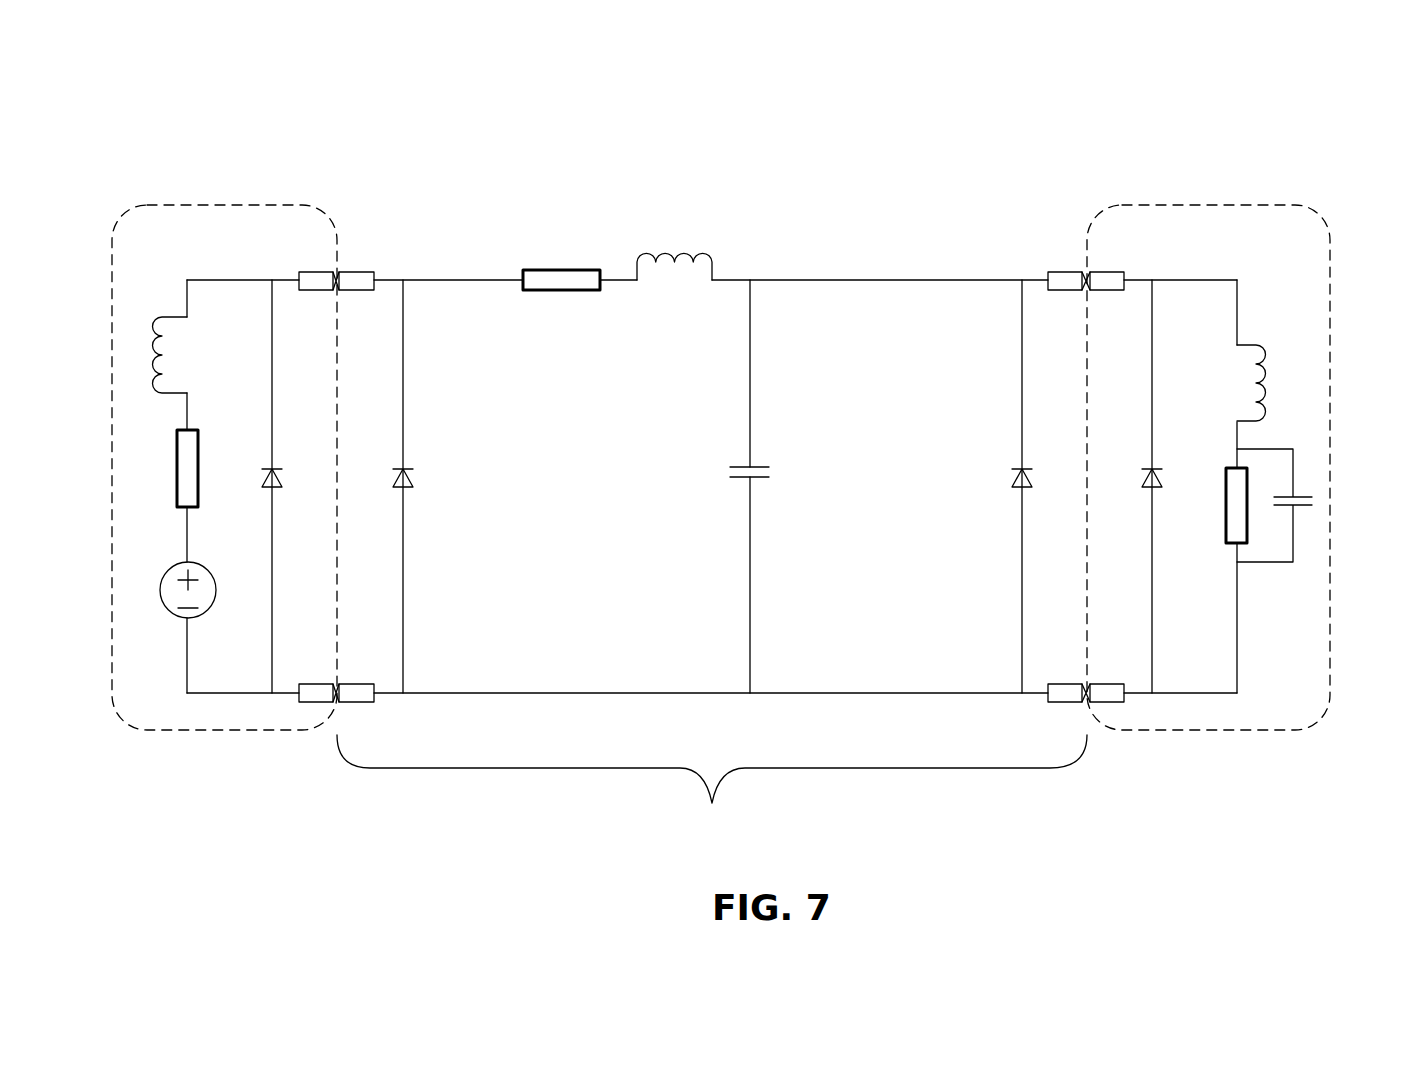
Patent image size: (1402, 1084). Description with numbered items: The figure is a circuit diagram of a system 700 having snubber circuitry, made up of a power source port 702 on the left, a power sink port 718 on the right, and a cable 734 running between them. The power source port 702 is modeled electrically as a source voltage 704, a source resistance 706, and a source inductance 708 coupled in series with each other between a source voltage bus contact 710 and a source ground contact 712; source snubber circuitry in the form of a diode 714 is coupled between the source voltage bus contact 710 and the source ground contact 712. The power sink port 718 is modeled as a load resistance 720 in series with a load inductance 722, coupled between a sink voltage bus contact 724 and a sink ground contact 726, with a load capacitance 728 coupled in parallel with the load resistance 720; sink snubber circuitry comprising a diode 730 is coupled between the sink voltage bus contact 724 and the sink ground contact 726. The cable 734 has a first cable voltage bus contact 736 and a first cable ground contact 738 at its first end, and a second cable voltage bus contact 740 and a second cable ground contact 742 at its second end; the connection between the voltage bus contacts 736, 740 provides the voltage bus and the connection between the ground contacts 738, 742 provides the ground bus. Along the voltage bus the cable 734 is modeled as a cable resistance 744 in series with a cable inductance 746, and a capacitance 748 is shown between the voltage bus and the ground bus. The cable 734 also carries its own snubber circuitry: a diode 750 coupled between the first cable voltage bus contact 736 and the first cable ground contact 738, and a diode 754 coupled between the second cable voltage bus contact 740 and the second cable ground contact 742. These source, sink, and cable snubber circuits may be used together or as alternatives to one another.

The system 700 is at (92, 122).
The power source port 702 is at (272, 205).
The source voltage 704 is at (163, 600).
The source resistance 706 is at (176, 470).
The source inductance 708 is at (162, 395).
The source voltage bus contact 710 is at (318, 291).
The source ground contact 712 is at (310, 703).
The diode 714 is at (262, 477).
The power sink port 718 is at (1180, 205).
The load resistance 720 is at (1224, 498).
The sink inductor 722 is at (1264, 380).
The sink voltage bus contact 724 is at (1105, 291).
The sink ground contact 726 is at (1112, 703).
The load capacitance 728 is at (1303, 508).
The diode 730 is at (1162, 477).
The cable 734 is at (712, 786).
The first cable voltage bus contact 736 is at (365, 271).
The first cable ground contact 738 is at (355, 703).
The second cable voltage bus contact 740 is at (1062, 271).
The second cable ground contact 742 is at (1065, 703).
The cable resistance 744 is at (568, 269).
The cable inductance 746 is at (686, 252).
The capacitance 748 is at (740, 479).
The diode 750 is at (413, 475).
The diode 754 is at (1012, 475).